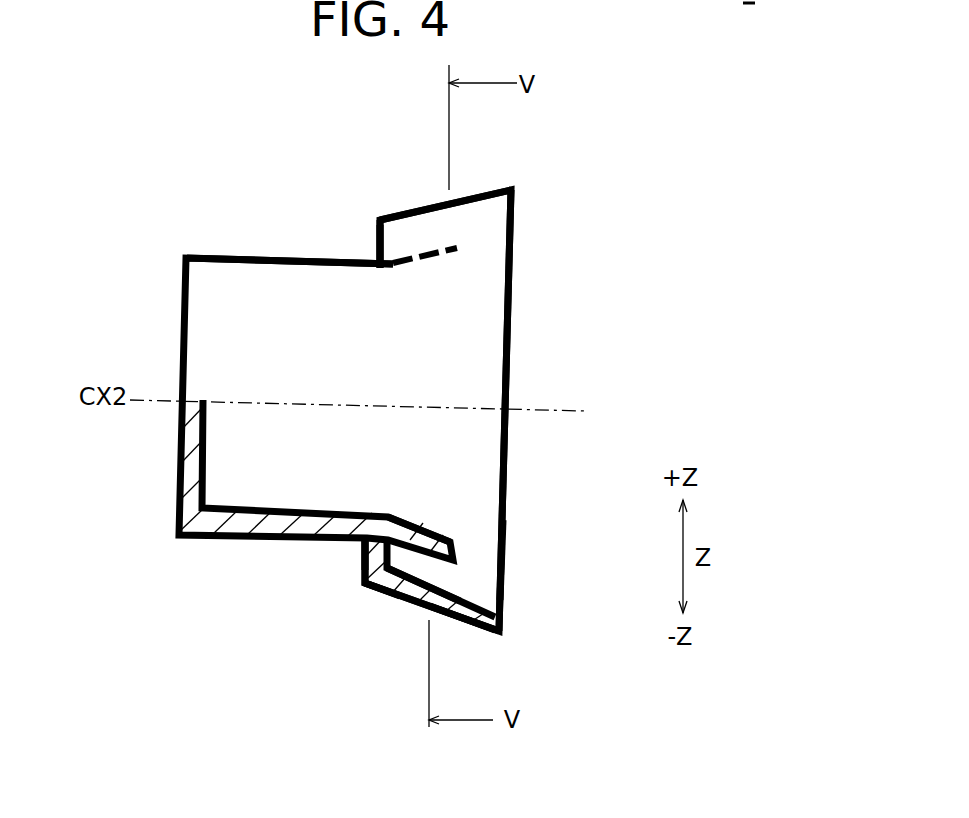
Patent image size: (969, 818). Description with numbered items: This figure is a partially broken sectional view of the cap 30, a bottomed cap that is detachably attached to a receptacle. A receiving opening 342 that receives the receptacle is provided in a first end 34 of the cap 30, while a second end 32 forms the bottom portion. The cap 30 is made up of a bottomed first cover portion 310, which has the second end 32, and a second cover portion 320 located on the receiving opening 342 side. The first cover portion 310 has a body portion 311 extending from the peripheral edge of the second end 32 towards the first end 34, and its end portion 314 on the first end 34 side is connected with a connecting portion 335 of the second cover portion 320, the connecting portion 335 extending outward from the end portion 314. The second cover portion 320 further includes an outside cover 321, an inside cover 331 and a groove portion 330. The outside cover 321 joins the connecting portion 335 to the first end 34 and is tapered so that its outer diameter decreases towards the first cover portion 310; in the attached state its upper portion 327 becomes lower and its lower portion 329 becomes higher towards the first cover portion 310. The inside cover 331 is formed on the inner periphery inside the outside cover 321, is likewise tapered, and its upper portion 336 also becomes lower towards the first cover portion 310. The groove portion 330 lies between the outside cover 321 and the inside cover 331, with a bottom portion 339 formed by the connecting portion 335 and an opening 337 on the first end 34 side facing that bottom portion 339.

The cap 30 is at (180, 262).
The first cover portion 310 is at (222, 235).
The body portion 311 is at (270, 255).
The end portion 314 is at (372, 265).
The second end 32 is at (182, 341).
The second cover portion 320 is at (503, 183).
The outside cover 321 is at (397, 608).
The upper portion 327 is at (475, 195).
The lower portion 329 is at (452, 620).
The groove portion 330 is at (363, 583).
The inside cover 331 is at (420, 530).
The connecting portion 335 is at (378, 247).
The upper portion 336 is at (430, 258).
The opening 337 is at (452, 570).
The bottom portion 339 is at (363, 555).
The first end 34 is at (505, 553).
The receiving opening 342 is at (508, 452).